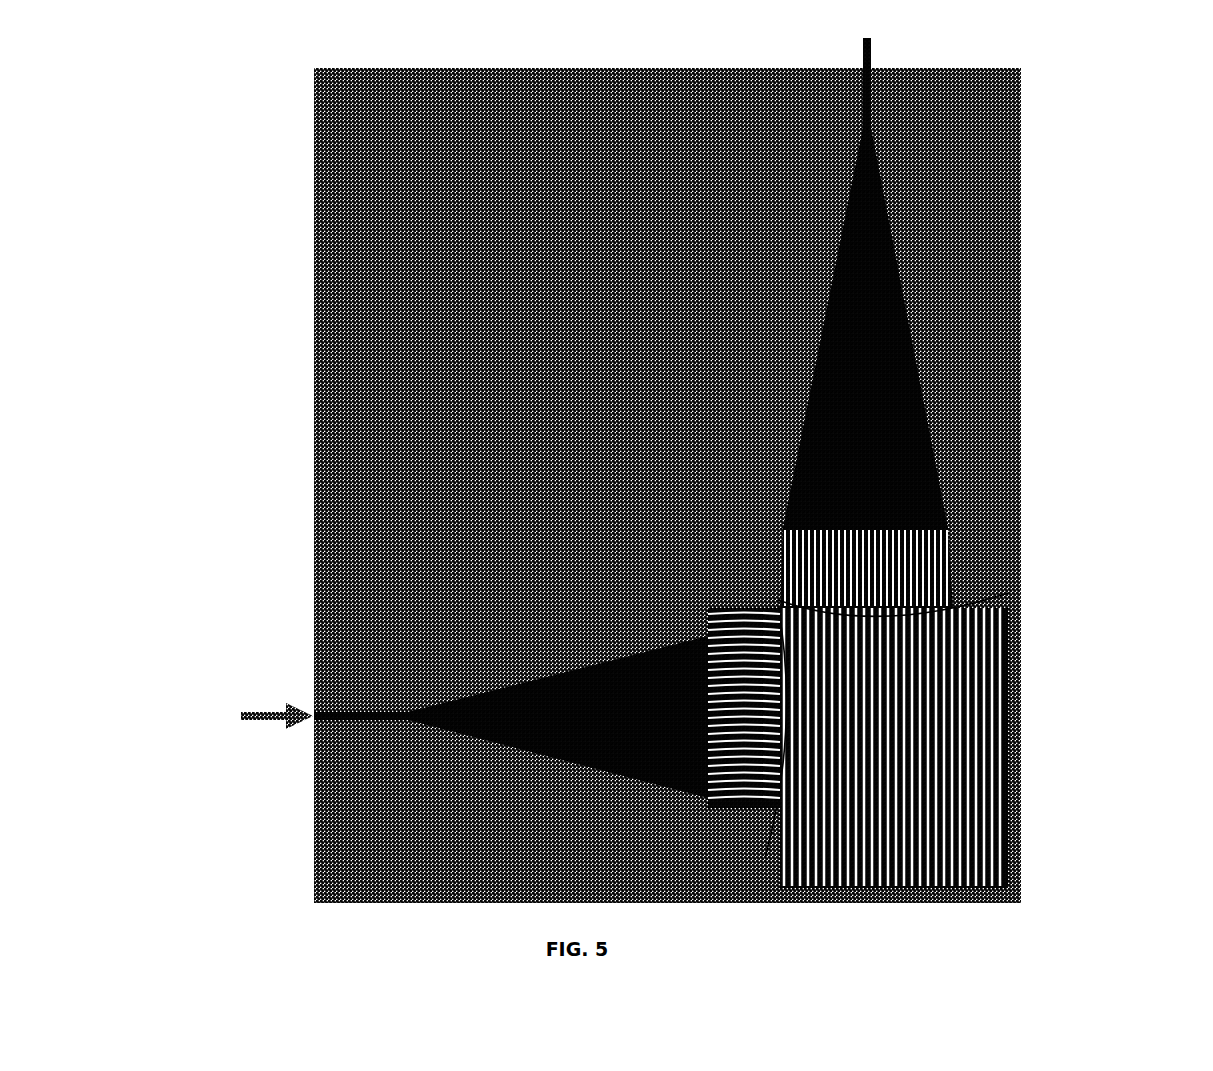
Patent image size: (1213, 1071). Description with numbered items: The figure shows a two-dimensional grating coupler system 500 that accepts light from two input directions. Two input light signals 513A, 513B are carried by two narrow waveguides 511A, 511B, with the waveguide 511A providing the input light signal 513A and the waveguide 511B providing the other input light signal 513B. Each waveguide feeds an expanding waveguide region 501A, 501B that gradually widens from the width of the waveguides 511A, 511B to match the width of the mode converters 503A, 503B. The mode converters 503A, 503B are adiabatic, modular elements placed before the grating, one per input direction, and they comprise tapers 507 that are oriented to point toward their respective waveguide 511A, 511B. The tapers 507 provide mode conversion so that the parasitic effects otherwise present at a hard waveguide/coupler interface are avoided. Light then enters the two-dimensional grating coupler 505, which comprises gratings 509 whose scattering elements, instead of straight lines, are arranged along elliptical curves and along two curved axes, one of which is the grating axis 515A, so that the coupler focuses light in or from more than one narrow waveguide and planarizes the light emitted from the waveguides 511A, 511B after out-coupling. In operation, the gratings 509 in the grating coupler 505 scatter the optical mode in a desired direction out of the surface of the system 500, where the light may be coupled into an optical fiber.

The two-dimensional grating coupler system 500 is at (121, 149).
The waveguide region 501A is at (820, 363).
The waveguide region 501B is at (463, 722).
The mode converter 503A is at (772, 517).
The mode converter 503B is at (686, 744).
The two-dimensional grating coupler 505 is at (1020, 688).
The tapers 507 is at (772, 553).
The gratings 509 is at (998, 795).
The waveguide 511A is at (850, 123).
The waveguide 511B is at (345, 707).
The input light signal 513A is at (870, 63).
The input light signal 513B is at (253, 700).
The grating axis 515A is at (717, 852).